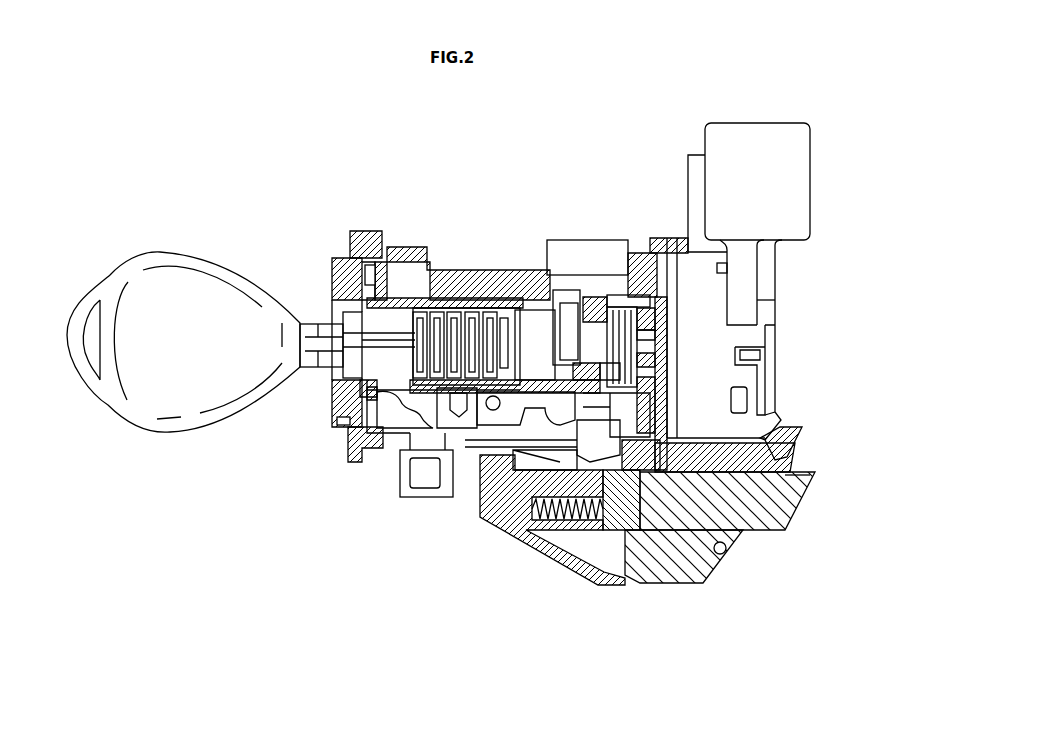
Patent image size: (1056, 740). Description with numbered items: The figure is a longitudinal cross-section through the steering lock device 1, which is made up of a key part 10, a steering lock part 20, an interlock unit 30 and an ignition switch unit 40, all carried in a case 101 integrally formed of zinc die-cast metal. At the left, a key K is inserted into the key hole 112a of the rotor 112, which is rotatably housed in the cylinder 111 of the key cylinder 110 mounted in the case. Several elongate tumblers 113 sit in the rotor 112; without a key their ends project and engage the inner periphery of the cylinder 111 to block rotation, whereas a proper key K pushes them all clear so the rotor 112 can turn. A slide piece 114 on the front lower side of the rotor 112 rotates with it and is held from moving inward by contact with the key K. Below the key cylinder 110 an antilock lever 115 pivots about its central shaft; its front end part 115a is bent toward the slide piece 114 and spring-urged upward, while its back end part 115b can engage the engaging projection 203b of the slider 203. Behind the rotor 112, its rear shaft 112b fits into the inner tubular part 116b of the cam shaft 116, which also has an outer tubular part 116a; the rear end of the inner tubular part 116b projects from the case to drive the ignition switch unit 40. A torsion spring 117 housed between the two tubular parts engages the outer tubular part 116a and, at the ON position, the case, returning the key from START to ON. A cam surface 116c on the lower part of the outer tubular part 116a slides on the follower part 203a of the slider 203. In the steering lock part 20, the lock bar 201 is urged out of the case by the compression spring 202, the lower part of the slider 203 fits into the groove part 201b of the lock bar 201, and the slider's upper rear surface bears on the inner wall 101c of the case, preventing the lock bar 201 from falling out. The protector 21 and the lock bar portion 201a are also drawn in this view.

The steering lock device 1 is at (582, 104).
The key K is at (135, 250).
The key part 10 is at (341, 214).
The key cylinder 110 is at (323, 254).
The key hole 112a is at (372, 231).
The rotor 112 is at (378, 330).
The case 101 is at (447, 270).
The cylinder 111 is at (470, 290).
The tumblers 113 is at (425, 400).
The slide piece 114 is at (332, 428).
The antilock lever 115 is at (427, 422).
The front end part 115a is at (372, 413).
The back end part 115b is at (485, 512).
The interlock unit 30 is at (556, 258).
The rear shaft 112b is at (578, 276).
The cam shaft 116 is at (593, 317).
The outer tubular part 116a is at (612, 300).
The inner tubular part 116b is at (652, 312).
The cam surface 116c is at (618, 400).
The torsion spring 117 is at (652, 356).
The ignition switch unit 40 is at (745, 301).
The steering lock part 20 is at (493, 564).
The slider 203 is at (657, 408).
The follower part 203a is at (667, 390).
The engaging projection 203b is at (617, 400).
The lock bar 201 is at (752, 517).
The locking bar portion 201a is at (780, 512).
The groove part 201b is at (660, 483).
The inner wall 101c is at (712, 548).
The protector 21 is at (603, 582).
The compression spring 202 is at (590, 520).